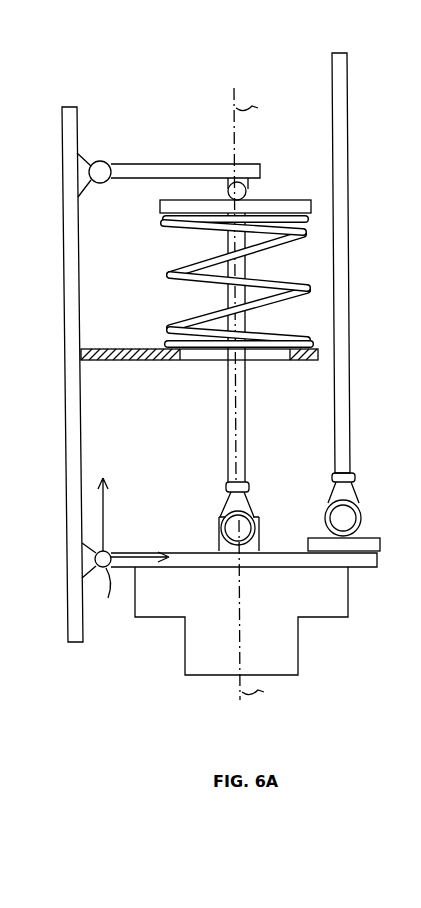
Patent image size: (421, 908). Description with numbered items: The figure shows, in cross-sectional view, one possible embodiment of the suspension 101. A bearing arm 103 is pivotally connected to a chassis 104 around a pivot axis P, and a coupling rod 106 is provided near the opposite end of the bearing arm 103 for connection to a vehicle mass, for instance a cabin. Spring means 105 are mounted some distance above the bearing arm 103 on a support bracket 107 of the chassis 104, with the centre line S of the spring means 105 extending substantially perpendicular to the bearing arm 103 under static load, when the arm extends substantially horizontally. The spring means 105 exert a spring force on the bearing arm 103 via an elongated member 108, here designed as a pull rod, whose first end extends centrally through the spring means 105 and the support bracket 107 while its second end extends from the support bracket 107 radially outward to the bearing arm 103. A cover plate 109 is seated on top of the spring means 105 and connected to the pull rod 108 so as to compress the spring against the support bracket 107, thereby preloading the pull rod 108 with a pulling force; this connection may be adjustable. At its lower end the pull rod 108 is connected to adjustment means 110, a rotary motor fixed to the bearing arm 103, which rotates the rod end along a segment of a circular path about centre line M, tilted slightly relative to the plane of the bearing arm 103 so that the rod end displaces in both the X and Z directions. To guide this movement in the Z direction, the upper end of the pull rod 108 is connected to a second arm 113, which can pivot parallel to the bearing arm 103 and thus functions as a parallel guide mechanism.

The suspension 101 is at (137, 78).
The bearing arm 103 is at (357, 553).
The chassis 104 is at (77, 430).
The spring means 105 is at (170, 277).
The coupling rod 106 is at (337, 410).
The support bracket 107 is at (103, 362).
The elongated member 108 is at (228, 428).
The cover plate 109 is at (158, 206).
The adjustment means 110 is at (290, 641).
The second arm 113 is at (137, 168).